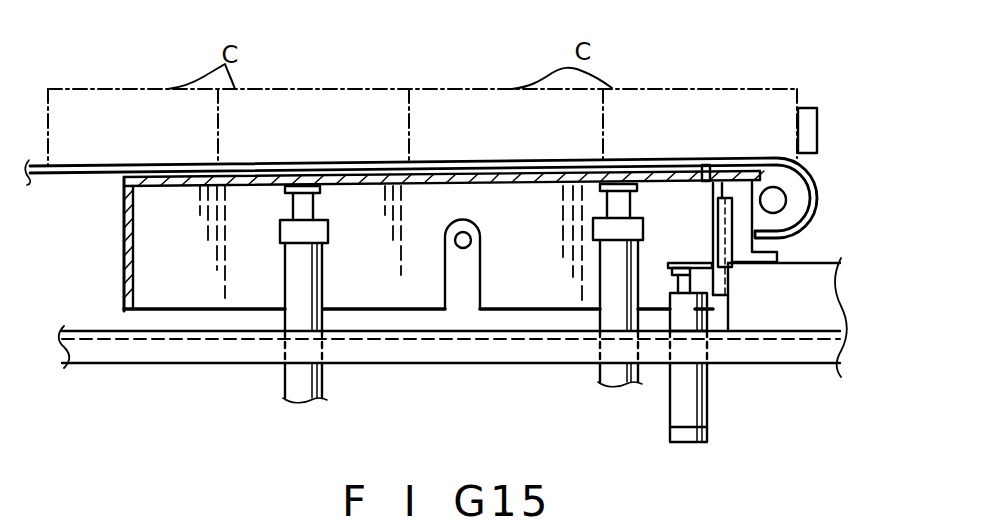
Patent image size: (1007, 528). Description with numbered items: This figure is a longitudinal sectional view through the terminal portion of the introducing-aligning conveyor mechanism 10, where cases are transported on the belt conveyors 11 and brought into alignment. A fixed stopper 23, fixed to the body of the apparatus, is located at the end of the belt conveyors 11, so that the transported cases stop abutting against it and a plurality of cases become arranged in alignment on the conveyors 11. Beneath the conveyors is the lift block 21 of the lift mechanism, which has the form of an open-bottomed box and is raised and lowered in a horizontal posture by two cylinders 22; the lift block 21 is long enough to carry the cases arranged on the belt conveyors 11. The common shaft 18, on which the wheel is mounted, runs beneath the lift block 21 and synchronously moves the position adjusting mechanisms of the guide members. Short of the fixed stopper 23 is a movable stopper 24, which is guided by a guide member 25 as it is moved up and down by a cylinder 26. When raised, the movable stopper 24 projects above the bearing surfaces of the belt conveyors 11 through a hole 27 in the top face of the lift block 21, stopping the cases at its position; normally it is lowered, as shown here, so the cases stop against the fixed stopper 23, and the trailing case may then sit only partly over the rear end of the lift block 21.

The introducing-aligning conveyor mechanism 10 is at (454, 198).
The belt conveyors 11 is at (812, 223).
The common shaft 18 is at (470, 240).
The lift block 21 is at (124, 256).
The cylinders 22 is at (296, 382).
The fixed stopper 23 is at (818, 120).
The movable stopper 24 is at (712, 215).
The guide member 25 is at (768, 262).
The cylinder 26 is at (705, 408).
The hole 27 is at (705, 177).